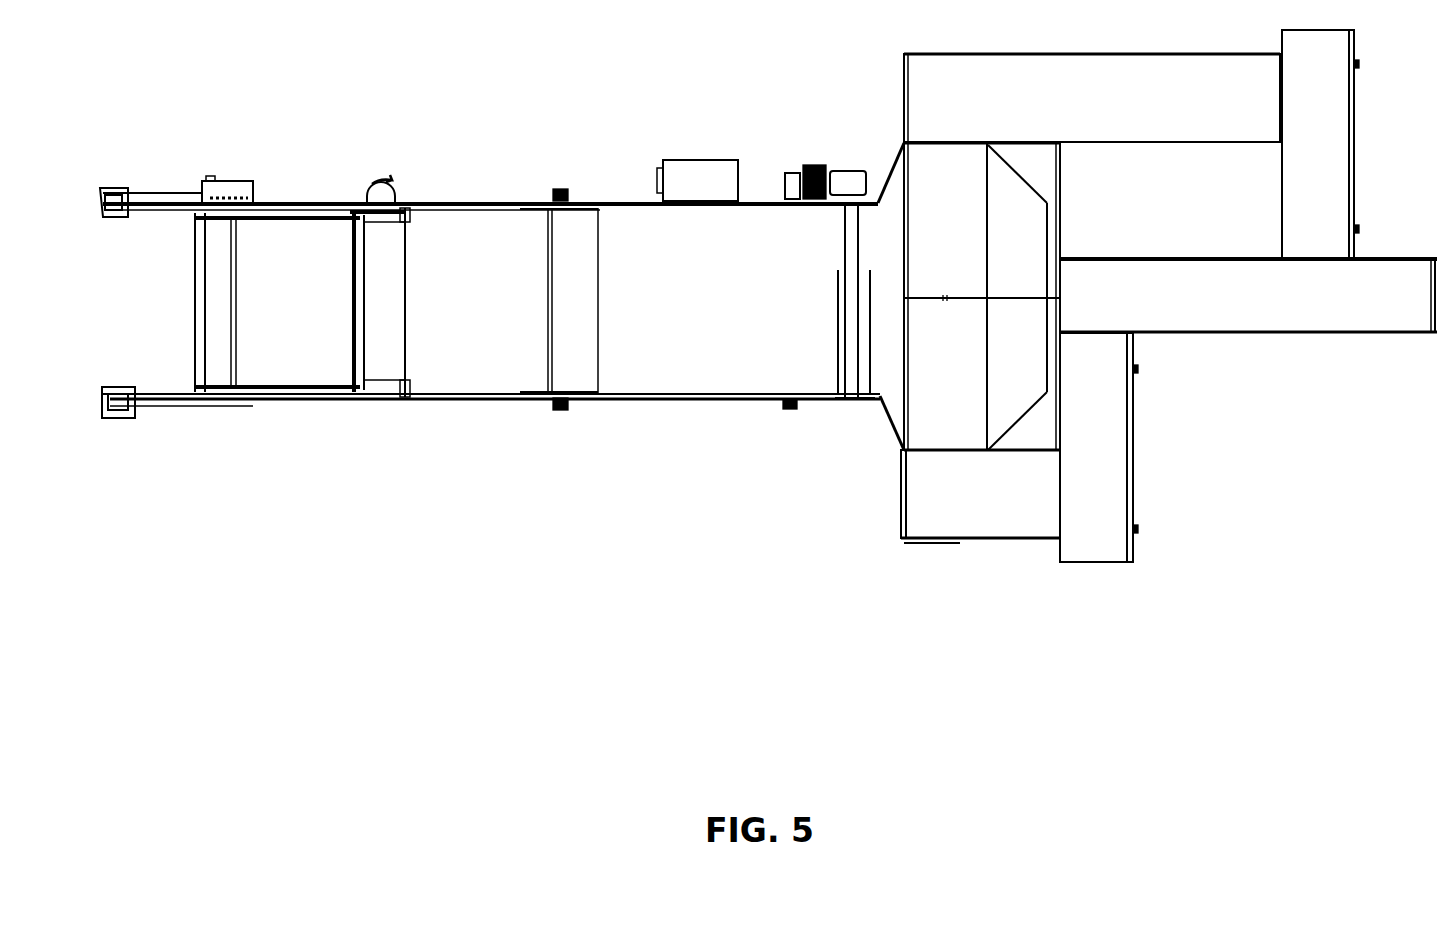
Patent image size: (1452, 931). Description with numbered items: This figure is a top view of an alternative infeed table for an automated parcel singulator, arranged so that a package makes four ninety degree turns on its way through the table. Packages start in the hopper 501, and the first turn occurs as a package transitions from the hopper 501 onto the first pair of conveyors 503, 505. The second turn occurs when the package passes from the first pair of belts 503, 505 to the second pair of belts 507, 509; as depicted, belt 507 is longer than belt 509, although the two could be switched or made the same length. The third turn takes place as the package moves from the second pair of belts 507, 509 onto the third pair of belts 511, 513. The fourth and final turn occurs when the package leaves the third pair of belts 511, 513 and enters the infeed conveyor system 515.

The hopper 501 is at (679, 313).
The first pair of conveyors (first belt) 503 is at (960, 230).
The first pair of conveyors (second belt) 505 is at (960, 371).
The second pair of belts (first belt) 507 is at (1069, 106).
The second pair of belts (second belt) 509 is at (1014, 506).
The third pair of belts (first belt) 511 is at (1337, 161).
The third pair of belts (second belt) 513 is at (1117, 456).
The infeed conveyor system 515 is at (1230, 305).